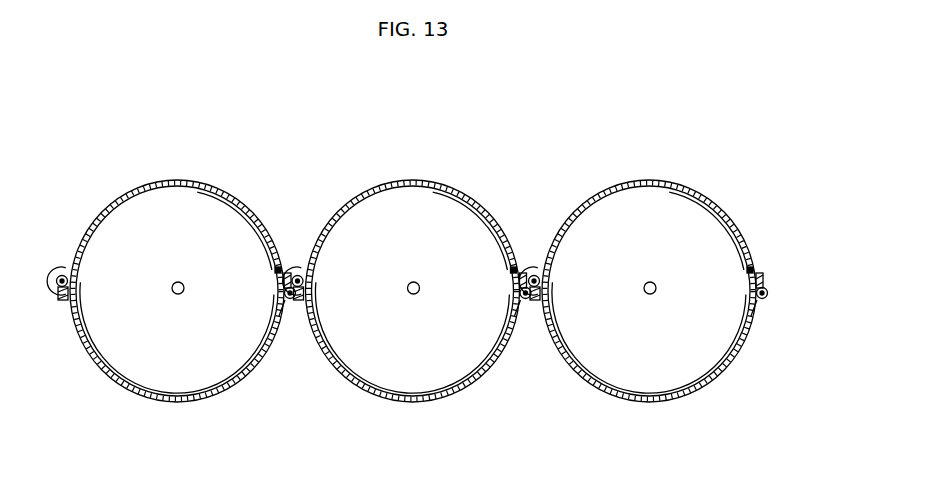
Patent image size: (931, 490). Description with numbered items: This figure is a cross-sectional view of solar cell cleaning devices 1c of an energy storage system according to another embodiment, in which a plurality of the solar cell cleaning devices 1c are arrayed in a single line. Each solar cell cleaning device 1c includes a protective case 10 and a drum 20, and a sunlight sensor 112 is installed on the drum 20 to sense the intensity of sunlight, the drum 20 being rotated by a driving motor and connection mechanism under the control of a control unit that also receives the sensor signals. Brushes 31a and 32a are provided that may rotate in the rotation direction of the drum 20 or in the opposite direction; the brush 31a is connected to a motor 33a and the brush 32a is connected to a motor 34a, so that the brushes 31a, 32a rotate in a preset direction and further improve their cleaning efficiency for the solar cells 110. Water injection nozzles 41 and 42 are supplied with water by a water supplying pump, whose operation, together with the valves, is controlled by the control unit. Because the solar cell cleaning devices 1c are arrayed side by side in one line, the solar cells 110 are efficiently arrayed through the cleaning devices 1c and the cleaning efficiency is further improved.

The solar cell cleaning device 1c is at (738, 111).
The protective case 10 is at (175, 404).
The solar cell 110 is at (165, 180).
The drum 20 is at (222, 207).
The motor 33a is at (70, 268).
The brush 31a is at (70, 282).
The water injection nozzle 41 is at (72, 293).
The sunlight sensor 112 is at (276, 271).
The water injection nozzle 42 is at (283, 287).
The brush 32a is at (285, 297).
The motor 34a is at (283, 312).